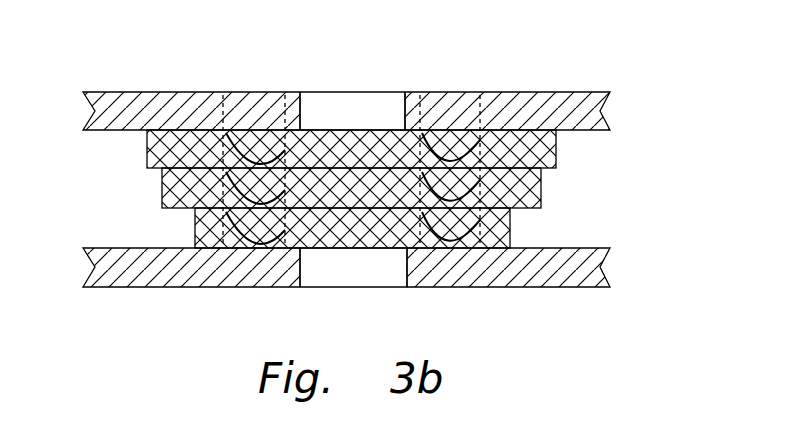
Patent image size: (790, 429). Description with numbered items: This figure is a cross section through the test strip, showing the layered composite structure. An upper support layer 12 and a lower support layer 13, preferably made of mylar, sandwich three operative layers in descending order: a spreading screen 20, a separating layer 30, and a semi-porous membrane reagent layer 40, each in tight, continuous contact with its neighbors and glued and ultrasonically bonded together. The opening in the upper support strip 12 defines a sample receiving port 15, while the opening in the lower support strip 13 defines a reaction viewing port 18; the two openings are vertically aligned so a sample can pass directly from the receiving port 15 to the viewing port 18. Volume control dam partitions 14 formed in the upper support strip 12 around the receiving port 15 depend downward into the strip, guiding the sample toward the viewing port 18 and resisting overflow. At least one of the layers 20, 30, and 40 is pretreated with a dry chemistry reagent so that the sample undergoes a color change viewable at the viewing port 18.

The upper support layer 12 is at (197, 98).
The lower support layer 13 is at (517, 288).
The volume control dam partitions 14 is at (452, 98).
The sample receiving port 15 is at (358, 105).
The reaction viewing port 18 is at (312, 284).
The spreading layer 20 is at (147, 157).
The separating layer 30 is at (541, 183).
The semi-porous membrane reagent layer 40 is at (510, 220).